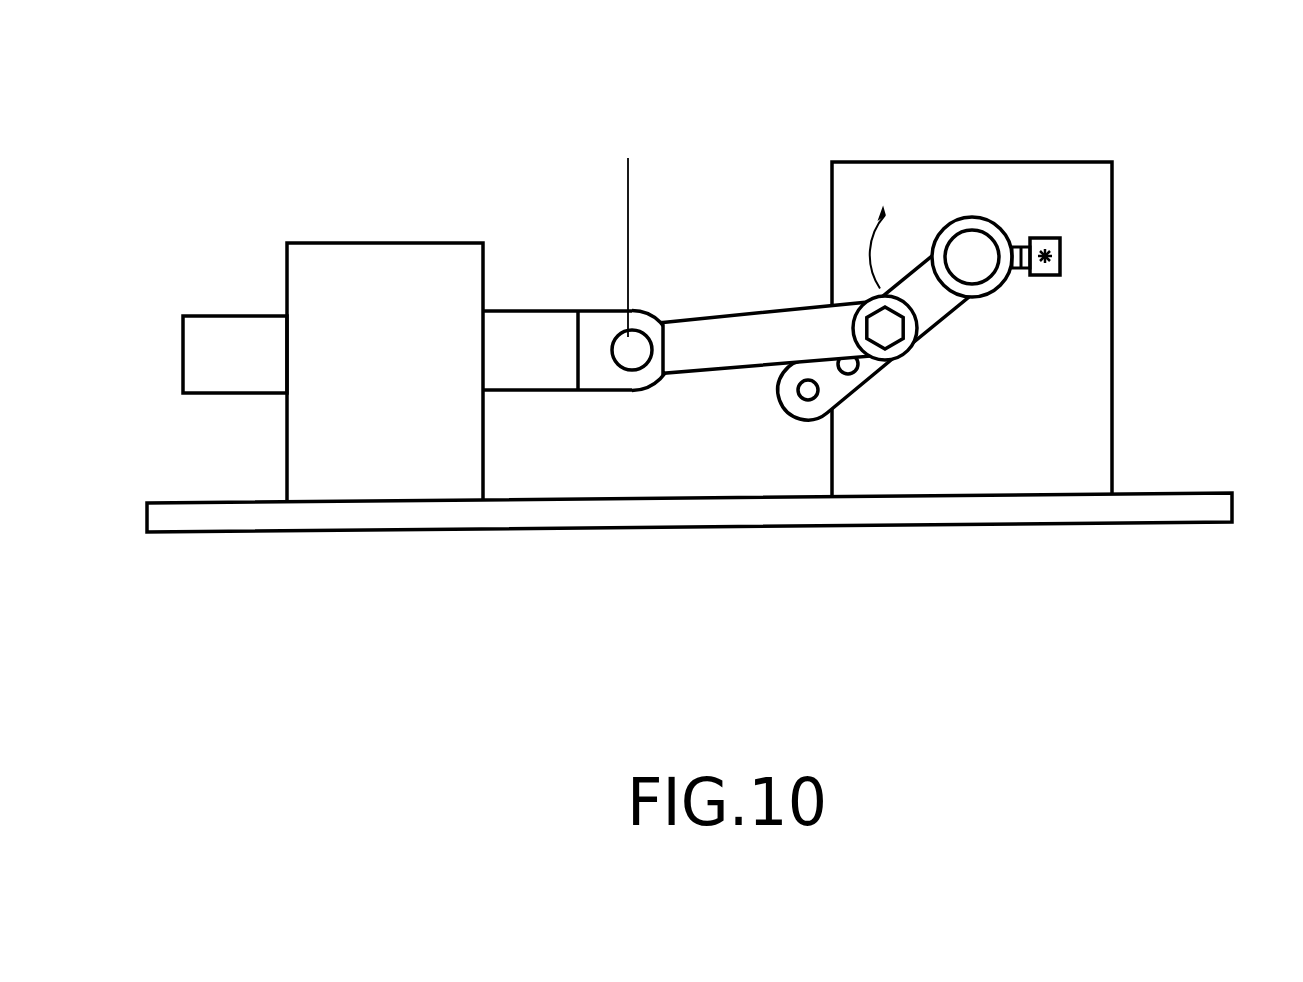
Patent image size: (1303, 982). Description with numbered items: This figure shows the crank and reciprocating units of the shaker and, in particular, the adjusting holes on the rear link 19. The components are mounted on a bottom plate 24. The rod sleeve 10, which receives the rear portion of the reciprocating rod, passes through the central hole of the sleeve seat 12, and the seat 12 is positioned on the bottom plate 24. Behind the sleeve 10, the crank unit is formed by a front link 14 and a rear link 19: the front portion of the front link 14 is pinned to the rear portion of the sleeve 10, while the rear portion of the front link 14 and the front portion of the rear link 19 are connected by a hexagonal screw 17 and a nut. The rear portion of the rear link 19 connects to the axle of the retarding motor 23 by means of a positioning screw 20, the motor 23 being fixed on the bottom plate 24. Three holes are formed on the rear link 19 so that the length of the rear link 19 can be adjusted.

The rod sleeve 10 is at (183, 317).
The sleeve seat 12 is at (360, 243).
The front link 14 is at (710, 328).
The hexagonal screw 17 is at (903, 340).
The rear link 19 is at (845, 387).
The positioning screw 20 is at (1062, 243).
The retarding motor 23 is at (972, 162).
The bottom plate 24 is at (705, 523).